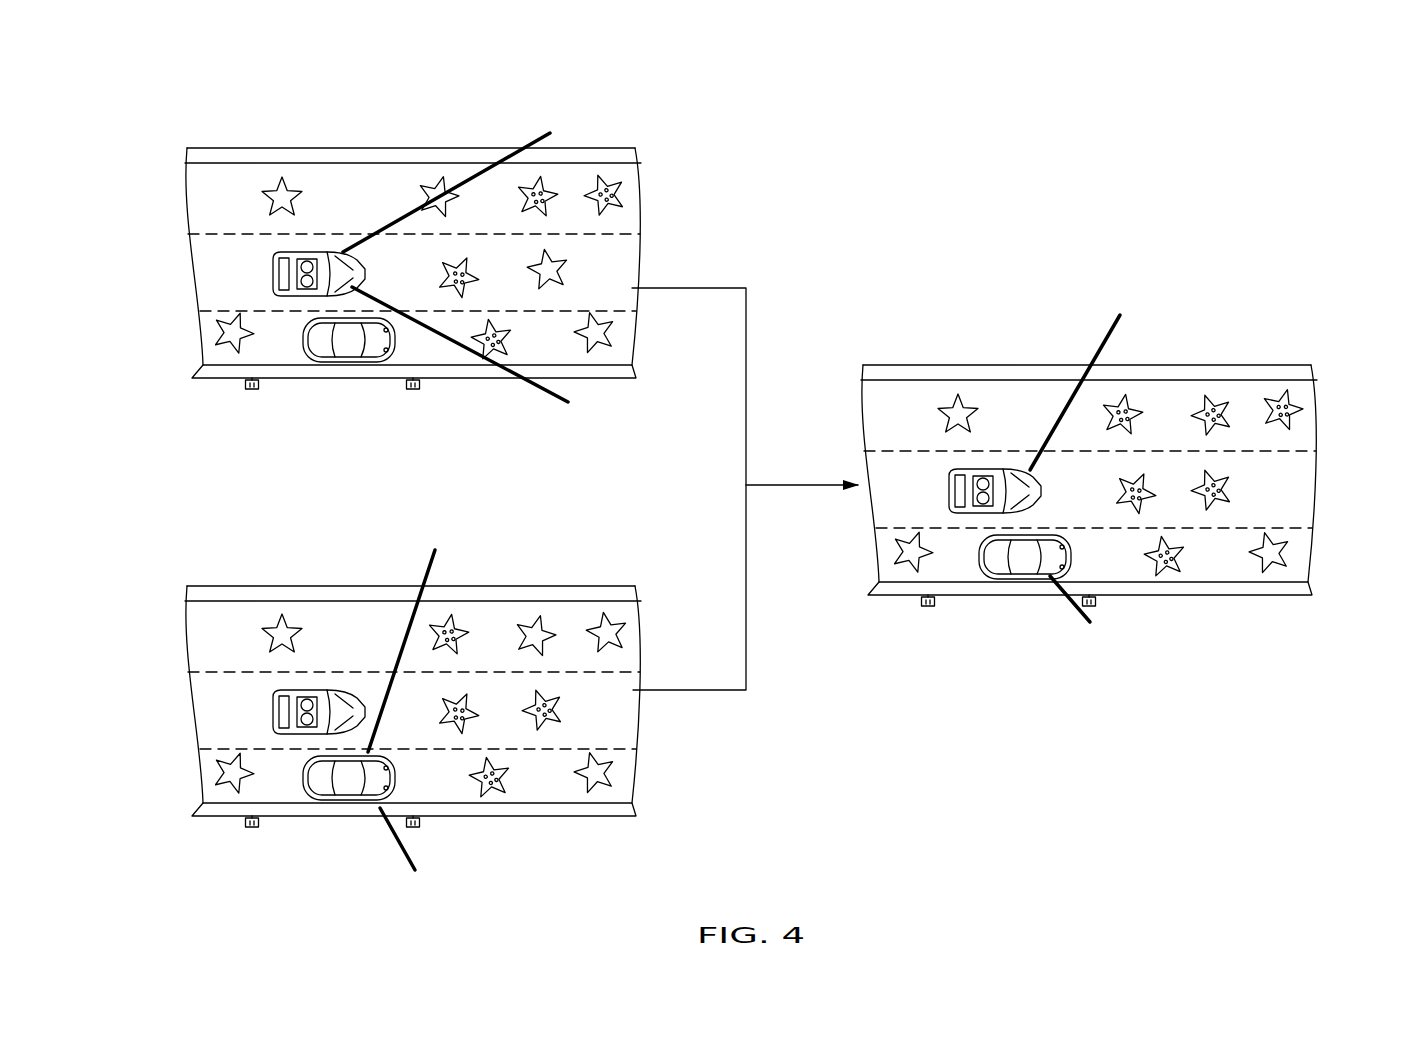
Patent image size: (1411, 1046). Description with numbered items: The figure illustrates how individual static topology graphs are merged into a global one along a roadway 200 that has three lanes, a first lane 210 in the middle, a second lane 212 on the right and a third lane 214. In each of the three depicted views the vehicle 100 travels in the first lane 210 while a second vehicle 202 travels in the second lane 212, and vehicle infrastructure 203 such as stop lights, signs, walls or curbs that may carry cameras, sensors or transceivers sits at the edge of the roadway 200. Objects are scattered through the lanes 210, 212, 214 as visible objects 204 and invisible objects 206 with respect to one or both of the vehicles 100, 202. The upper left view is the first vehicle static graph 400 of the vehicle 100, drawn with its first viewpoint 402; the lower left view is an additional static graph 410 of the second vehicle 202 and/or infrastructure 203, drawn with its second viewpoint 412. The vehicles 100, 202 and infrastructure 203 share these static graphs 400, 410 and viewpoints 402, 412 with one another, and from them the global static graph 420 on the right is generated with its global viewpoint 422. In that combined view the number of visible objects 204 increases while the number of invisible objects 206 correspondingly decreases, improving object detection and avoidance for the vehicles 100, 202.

The vehicle 100 is at (295, 250).
The roadway 200 is at (660, 152).
The second vehicle 202 is at (327, 362).
The vehicle infrastructure 203 is at (252, 392).
The visible objects 204 is at (548, 180).
The invisible objects 206 is at (281, 180).
The first lane 210 is at (630, 275).
The second lane 212 is at (630, 352).
The third lane 214 is at (640, 207).
The first vehicle static graph 400 is at (150, 137).
The first viewpoint 402 is at (548, 130).
The additional static graph 410 is at (160, 612).
The second viewpoint 412 is at (437, 550).
The global static graph 420 is at (873, 350).
The global viewpoint 422 is at (1122, 316).